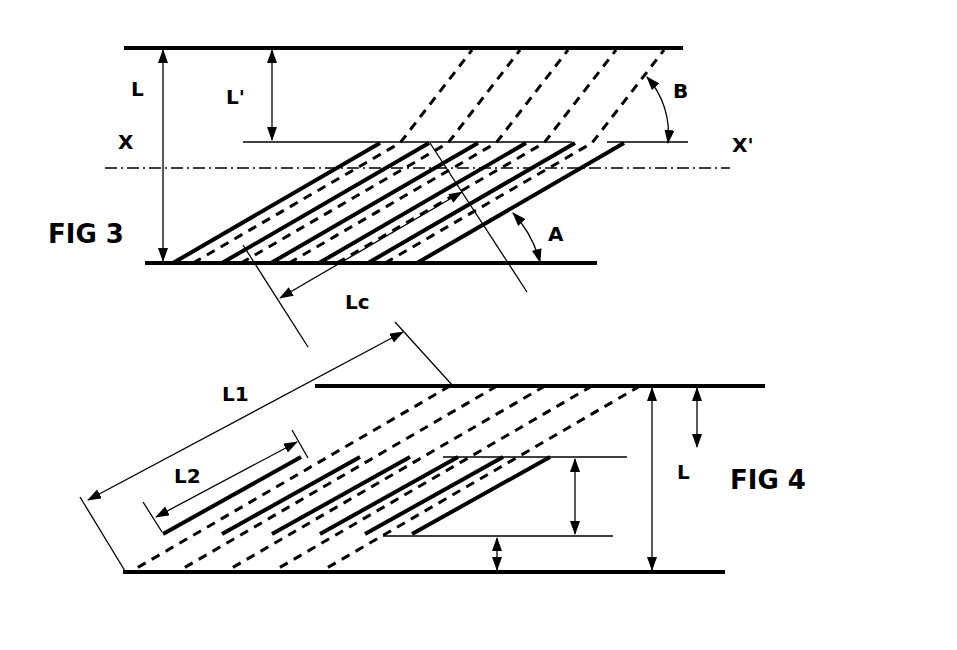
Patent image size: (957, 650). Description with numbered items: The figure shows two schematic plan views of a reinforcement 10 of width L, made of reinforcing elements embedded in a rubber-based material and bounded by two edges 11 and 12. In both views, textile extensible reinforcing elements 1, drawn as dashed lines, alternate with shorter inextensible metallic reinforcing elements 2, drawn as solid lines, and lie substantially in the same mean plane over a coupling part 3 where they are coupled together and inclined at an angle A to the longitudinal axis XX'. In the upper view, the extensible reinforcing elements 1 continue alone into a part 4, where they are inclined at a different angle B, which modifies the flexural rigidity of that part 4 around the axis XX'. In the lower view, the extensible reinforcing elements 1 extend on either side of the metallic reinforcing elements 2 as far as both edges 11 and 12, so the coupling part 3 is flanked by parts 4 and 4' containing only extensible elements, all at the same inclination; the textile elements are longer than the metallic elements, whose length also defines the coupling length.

In FIG. 3, the textile extensible first reinforcing elements 1 is at (437, 98).
In FIG. 4, the textile extensible first reinforcing elements 1 is at (437, 430).
In FIG. 3, the inextensible metallic second reinforcing elements 2 is at (274, 203).
In FIG. 4, the inextensible metallic second reinforcing elements 2 is at (443, 520).
In FIG. 3, the coupling part 3 is at (603, 207).
In FIG. 4, the coupling part 3 is at (578, 490).
In FIG. 3, the part 4 is at (729, 102).
In FIG. 4, the part 4 is at (718, 417).
In FIG. 4, the part 4' is at (516, 553).
In FIG. 3, the reinforcement 10 is at (300, 90).
In FIG. 4, the reinforcement 10 is at (681, 413).
In FIG. 4, the edge 11 is at (620, 575).
In FIG. 4, the edge 12 is at (623, 385).